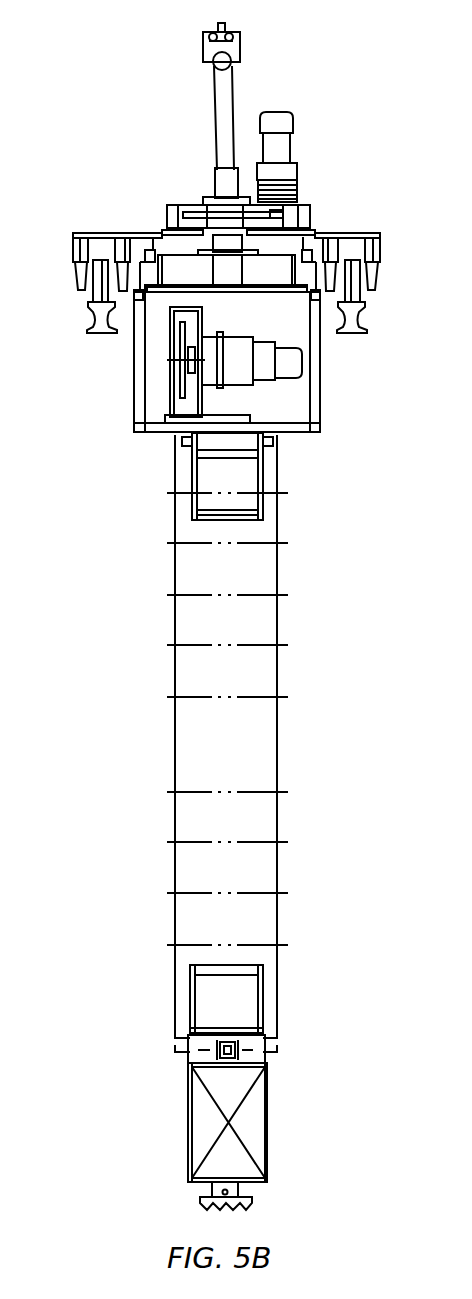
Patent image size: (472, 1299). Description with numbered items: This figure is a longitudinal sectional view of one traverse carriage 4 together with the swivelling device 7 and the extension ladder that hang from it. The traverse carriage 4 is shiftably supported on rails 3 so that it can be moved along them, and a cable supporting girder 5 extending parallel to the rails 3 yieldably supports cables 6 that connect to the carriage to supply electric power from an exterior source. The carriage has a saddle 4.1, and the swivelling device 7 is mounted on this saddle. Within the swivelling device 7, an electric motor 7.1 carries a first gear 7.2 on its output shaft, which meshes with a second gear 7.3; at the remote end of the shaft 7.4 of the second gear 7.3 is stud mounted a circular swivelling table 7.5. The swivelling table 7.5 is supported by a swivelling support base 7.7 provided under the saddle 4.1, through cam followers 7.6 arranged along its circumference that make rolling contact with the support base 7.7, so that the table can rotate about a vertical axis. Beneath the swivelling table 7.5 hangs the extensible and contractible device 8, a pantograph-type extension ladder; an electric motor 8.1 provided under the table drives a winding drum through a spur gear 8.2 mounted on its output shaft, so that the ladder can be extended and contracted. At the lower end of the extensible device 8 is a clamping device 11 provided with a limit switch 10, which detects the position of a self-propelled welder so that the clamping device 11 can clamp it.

The rails 3 is at (90, 313).
The traverse carriage 4 is at (76, 233).
The saddle 4.1 is at (300, 212).
The cable supporting girder 5 is at (240, 45).
The cables 6 is at (225, 97).
The swivelling device 7 is at (285, 252).
The electric motor 7.1 is at (283, 121).
The first gear 7.2 is at (295, 206).
The second gear 7.3 is at (227, 209).
The shaft 7.4 is at (227, 205).
The swivelling table 7.5 is at (267, 252).
The cam followers 7.6 is at (151, 250).
The swivelling support base 7.7 is at (138, 300).
The extensible and contractible device 8 is at (278, 682).
The electric motor 8.1 is at (263, 377).
The spur gear 8.2 is at (180, 388).
The limit switch 10 is at (250, 1199).
The clamping device 11 is at (227, 1192).